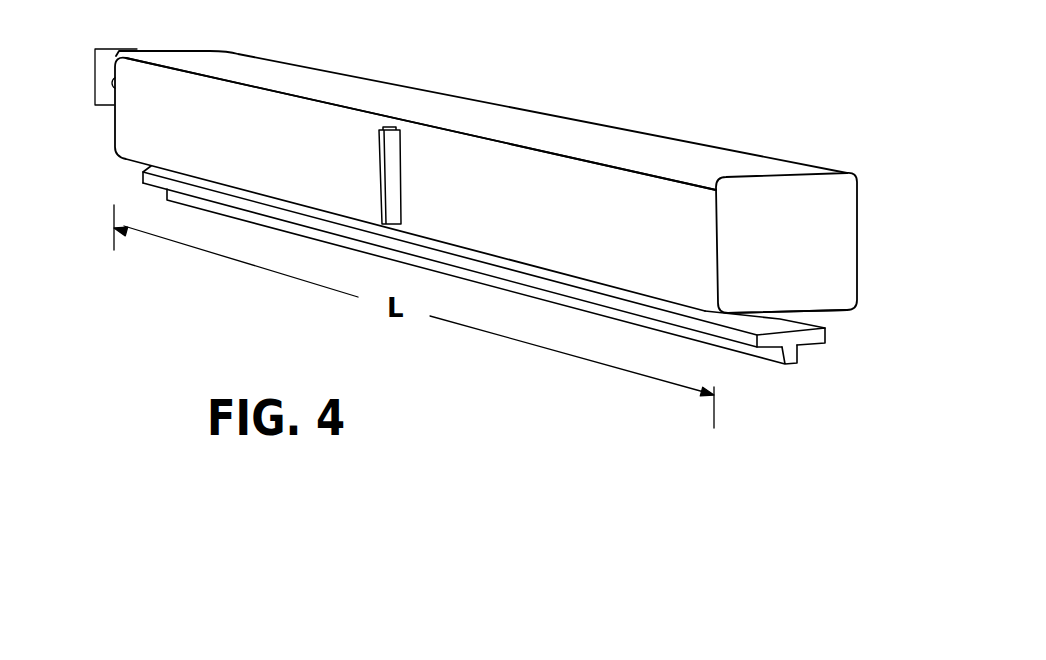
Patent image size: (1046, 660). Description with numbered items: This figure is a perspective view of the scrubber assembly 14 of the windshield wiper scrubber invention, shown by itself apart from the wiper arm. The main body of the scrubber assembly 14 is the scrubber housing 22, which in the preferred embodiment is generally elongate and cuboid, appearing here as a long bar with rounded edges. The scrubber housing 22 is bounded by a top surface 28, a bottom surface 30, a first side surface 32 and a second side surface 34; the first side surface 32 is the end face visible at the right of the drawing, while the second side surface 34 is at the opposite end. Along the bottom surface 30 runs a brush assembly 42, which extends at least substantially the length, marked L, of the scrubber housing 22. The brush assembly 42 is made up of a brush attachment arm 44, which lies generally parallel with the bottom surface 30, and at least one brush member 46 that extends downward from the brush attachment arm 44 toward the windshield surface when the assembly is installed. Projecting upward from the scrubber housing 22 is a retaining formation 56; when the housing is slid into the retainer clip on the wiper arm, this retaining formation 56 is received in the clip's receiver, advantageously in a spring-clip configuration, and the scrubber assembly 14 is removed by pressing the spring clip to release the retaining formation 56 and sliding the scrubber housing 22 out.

The scrubber assembly 14 is at (520, 183).
The scrubber housing 22 is at (408, 88).
The top surface 28 is at (713, 148).
The bottom surface 30 is at (826, 313).
The first side surface 32 is at (858, 225).
The second side surface 34 is at (113, 127).
The brush assembly 42 is at (522, 300).
The brush attachment arm 44 is at (806, 320).
The brush member 46 is at (667, 343).
The retaining formation 56 is at (395, 204).